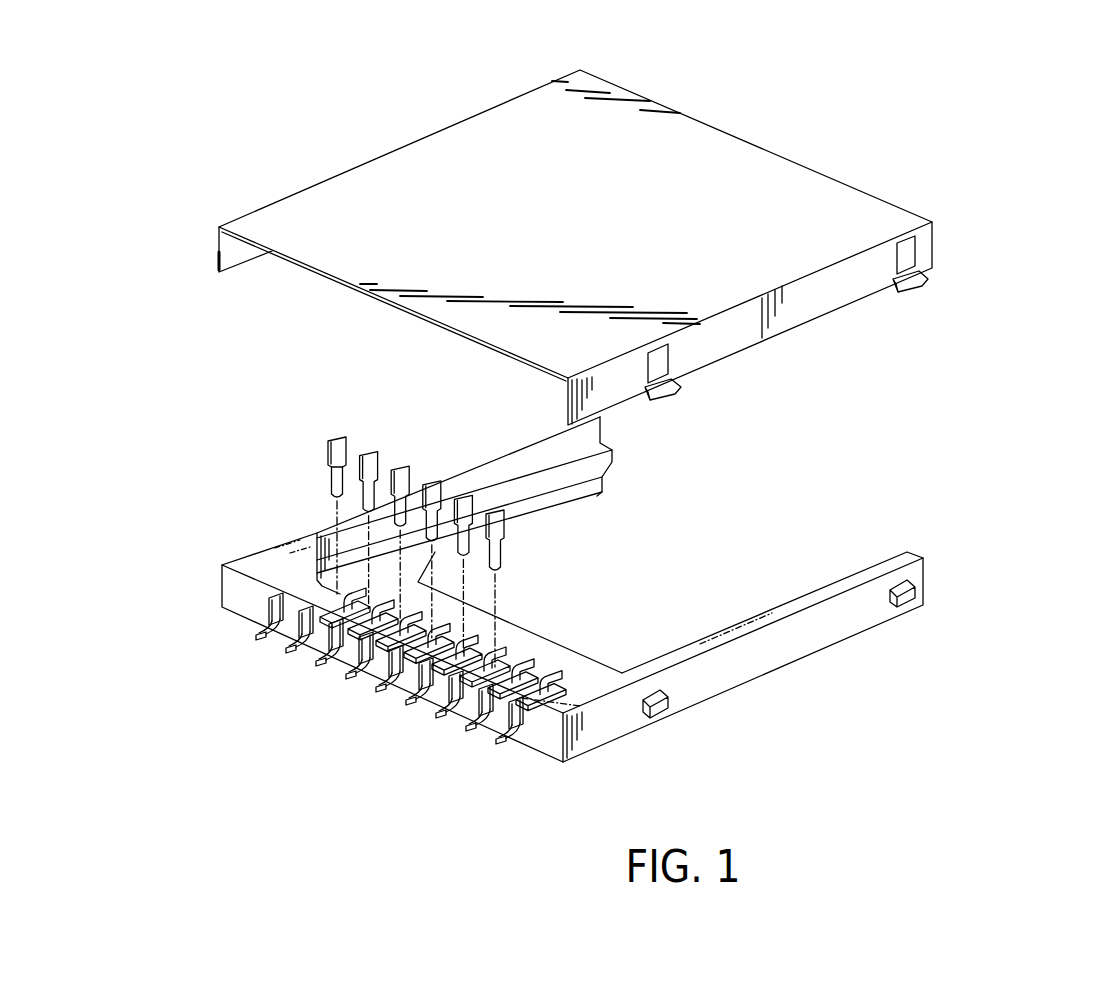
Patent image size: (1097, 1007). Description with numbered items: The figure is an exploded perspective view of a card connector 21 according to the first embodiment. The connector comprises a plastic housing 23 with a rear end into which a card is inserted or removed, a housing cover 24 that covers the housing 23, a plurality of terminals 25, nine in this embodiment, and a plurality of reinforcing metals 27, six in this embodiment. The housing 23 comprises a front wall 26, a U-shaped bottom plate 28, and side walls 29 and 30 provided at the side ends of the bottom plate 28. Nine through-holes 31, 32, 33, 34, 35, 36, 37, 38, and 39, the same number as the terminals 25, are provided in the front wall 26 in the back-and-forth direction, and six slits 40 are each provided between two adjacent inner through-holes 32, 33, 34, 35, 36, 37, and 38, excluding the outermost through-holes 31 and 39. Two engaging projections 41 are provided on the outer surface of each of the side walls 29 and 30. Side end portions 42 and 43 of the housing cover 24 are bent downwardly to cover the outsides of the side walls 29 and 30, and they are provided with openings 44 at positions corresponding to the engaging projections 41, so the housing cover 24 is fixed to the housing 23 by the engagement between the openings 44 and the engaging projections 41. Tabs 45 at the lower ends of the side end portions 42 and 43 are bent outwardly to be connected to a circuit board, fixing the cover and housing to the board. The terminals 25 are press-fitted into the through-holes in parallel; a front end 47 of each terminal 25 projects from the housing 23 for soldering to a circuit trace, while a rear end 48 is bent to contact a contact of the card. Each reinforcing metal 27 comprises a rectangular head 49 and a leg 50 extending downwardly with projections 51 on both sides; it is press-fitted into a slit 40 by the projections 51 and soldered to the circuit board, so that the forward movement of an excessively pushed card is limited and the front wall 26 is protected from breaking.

The card connector 21 is at (1008, 284).
The housing 23 is at (601, 596).
The housing cover 24 is at (817, 165).
The terminals 25 is at (505, 768).
The front wall 26 is at (550, 749).
The reinforcing metal 27 is at (383, 526).
The bottom plate 28 is at (576, 660).
The side wall 29 is at (853, 622).
The side wall 30 is at (520, 437).
The through-hole 31 is at (239, 632).
The through-hole 32 is at (270, 648).
The through-hole 33 is at (301, 662).
The through-hole 34 is at (331, 675).
The through-hole 35 is at (375, 698).
The through-hole 36 is at (406, 713).
The through-hole 37 is at (437, 725).
The through-hole 38 is at (467, 739).
The through-hole 39 is at (495, 751).
The slit 40 is at (532, 665).
The engaging projection 41 is at (670, 712).
The side end portion 42 is at (828, 297).
The side end portion 43 is at (240, 258).
The opening 44 is at (660, 362).
The tab 45 is at (672, 394).
The front end 47 is at (370, 672).
The rear end 48 is at (503, 640).
The rectangular head 49 is at (328, 425).
The leg 50 is at (303, 502).
The projections 51 is at (297, 473).